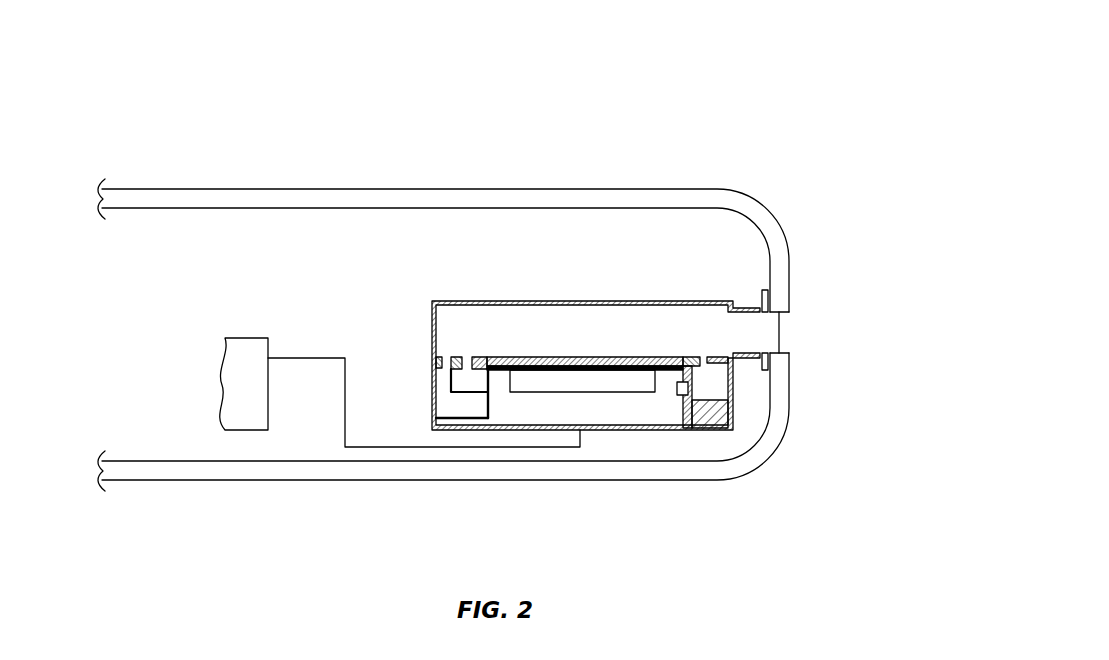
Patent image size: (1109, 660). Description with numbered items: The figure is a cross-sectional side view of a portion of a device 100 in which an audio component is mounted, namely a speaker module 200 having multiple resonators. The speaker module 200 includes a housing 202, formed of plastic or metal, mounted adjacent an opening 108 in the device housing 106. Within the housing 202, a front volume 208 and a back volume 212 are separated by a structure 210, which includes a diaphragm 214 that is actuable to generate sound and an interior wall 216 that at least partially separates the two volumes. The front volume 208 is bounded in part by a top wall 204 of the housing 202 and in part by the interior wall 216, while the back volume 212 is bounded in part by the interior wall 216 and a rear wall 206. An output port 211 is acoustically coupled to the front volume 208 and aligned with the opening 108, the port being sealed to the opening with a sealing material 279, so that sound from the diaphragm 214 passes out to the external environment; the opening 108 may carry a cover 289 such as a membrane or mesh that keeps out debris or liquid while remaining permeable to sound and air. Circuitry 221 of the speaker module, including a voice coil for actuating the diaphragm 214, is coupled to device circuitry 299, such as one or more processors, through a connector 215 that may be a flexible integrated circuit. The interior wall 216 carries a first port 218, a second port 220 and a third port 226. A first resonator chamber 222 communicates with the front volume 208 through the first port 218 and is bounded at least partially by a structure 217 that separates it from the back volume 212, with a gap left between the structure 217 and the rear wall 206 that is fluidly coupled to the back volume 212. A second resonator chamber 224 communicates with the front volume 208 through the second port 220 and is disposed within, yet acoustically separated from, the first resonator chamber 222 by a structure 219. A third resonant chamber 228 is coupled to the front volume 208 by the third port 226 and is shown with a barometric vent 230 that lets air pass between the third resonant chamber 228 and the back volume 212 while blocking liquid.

The device 100 is at (700, 106).
The housing 106 is at (757, 215).
The opening 108 is at (764, 330).
The speaker module 200 is at (712, 288).
The housing 202 is at (430, 312).
The top wall 204 is at (603, 357).
The rear wall 206 is at (600, 392).
The front volume 208 is at (565, 330).
The structure 210 is at (478, 357).
The output port 211 is at (796, 315).
The back volume 212 is at (525, 412).
The diaphragm 214 is at (500, 357).
The connector 215 is at (310, 365).
The interior wall 216 is at (457, 357).
The structure 217 is at (488, 400).
The first port 218 is at (441, 357).
The structure 219 is at (437, 383).
The second port 220 is at (462, 392).
The circuitry 221 is at (678, 388).
The first resonator chamber 222 is at (441, 420).
The second resonator chamber 224 is at (456, 417).
The third port 226 is at (733, 400).
The third resonant chamber 228 is at (712, 415).
The barometric vent 230 is at (688, 412).
The sealing material 279 is at (788, 302).
The cover 289 is at (781, 347).
The device circuitry 299 is at (248, 338).